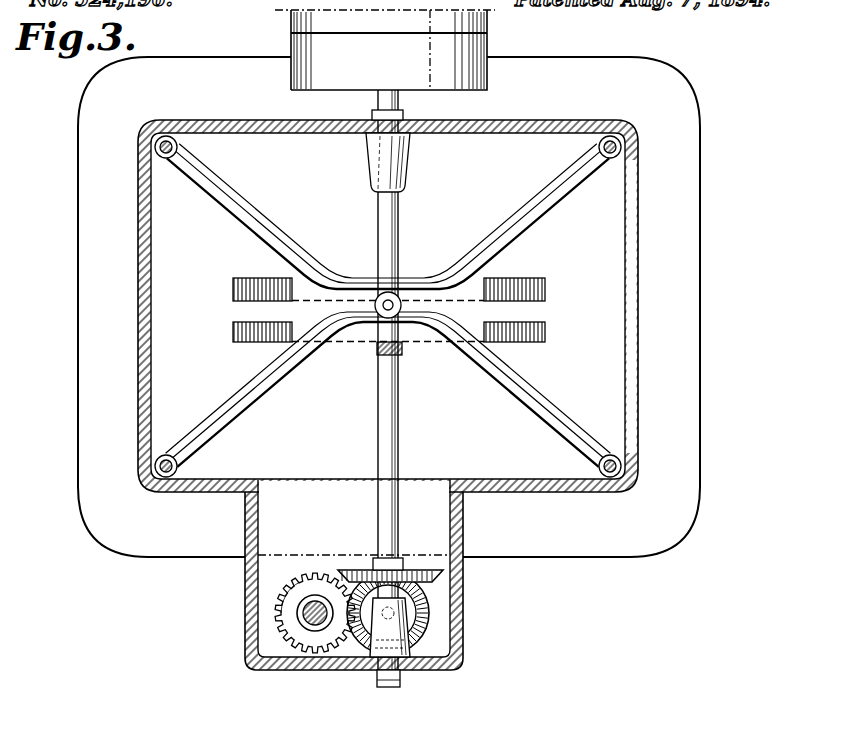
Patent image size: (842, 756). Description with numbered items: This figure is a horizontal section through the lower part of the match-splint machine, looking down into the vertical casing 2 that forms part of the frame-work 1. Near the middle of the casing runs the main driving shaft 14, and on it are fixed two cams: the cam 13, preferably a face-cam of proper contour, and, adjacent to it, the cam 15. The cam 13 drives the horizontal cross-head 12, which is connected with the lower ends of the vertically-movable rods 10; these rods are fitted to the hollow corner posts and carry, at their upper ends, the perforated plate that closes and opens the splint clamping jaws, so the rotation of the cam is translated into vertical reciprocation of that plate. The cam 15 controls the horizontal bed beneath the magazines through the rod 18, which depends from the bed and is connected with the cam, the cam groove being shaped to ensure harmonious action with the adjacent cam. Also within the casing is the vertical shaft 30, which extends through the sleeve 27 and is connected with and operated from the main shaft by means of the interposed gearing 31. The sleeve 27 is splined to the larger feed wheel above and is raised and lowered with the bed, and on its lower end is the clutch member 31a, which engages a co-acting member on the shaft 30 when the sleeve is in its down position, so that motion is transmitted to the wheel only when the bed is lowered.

The frame-work 1 is at (700, 435).
The vertical casing 2 is at (638, 369).
The vertically-movable rods 10 is at (167, 140).
The horizontal cross-head 12 is at (273, 234).
The cam 13 is at (545, 293).
The main driving shaft 14 is at (403, 213).
The cam 15 is at (548, 336).
The rod 18 is at (402, 352).
The sleeve 27 is at (300, 612).
The vertical shaft 30 is at (310, 633).
The interposed gearing 31 is at (433, 600).
The clutch member 31a is at (293, 622).